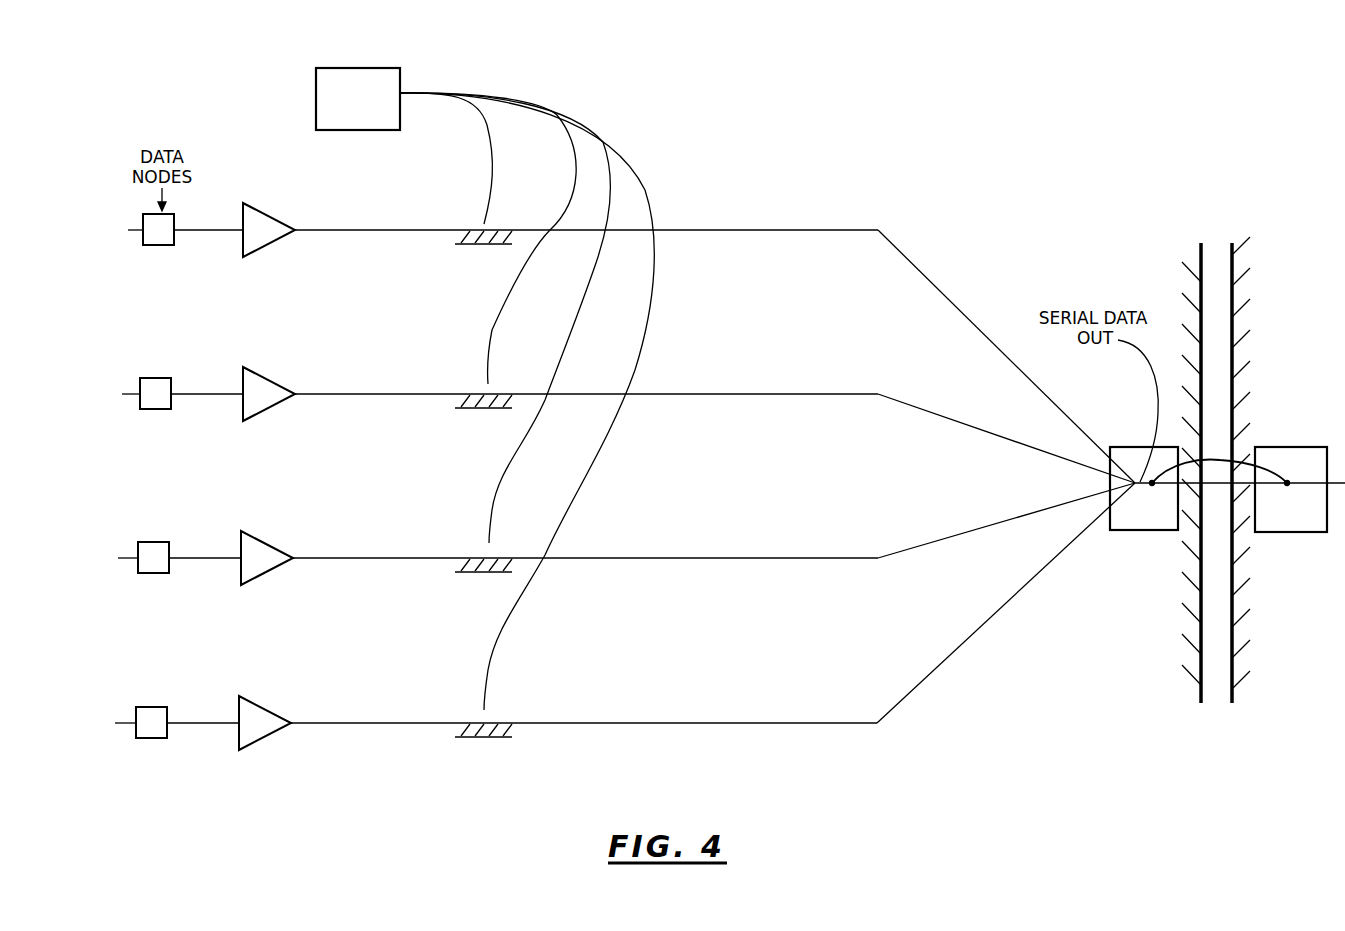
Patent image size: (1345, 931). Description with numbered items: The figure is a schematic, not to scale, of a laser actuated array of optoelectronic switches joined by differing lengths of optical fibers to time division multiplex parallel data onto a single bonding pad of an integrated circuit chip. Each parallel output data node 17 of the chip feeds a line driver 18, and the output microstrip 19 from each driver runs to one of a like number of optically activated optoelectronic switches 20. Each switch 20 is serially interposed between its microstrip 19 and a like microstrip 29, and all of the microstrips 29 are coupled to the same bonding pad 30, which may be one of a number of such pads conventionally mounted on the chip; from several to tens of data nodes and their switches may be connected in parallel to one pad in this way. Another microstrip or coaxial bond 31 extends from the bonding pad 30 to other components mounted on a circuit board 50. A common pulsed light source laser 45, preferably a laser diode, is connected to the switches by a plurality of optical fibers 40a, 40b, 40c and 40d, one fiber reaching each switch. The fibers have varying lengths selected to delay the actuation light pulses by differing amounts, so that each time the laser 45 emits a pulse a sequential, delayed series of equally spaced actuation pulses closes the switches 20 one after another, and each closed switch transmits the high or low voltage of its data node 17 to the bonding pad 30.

The data node 17 is at (168, 245).
The amplifier 18 is at (258, 204).
The microstrip 19 is at (369, 230).
The optoelectronic switch 20 is at (462, 246).
The microstrip 29 is at (788, 230).
The bonding pad 30 is at (1128, 447).
The microstrip or coaxial bond 31 is at (1210, 462).
The optical fiber 40a is at (496, 178).
The optical fiber 40b is at (553, 222).
The optical fiber 40c is at (593, 287).
The optical fiber 40d is at (638, 353).
The pulsed light source laser 45 is at (362, 67).
The circuit board 50 is at (1273, 354).